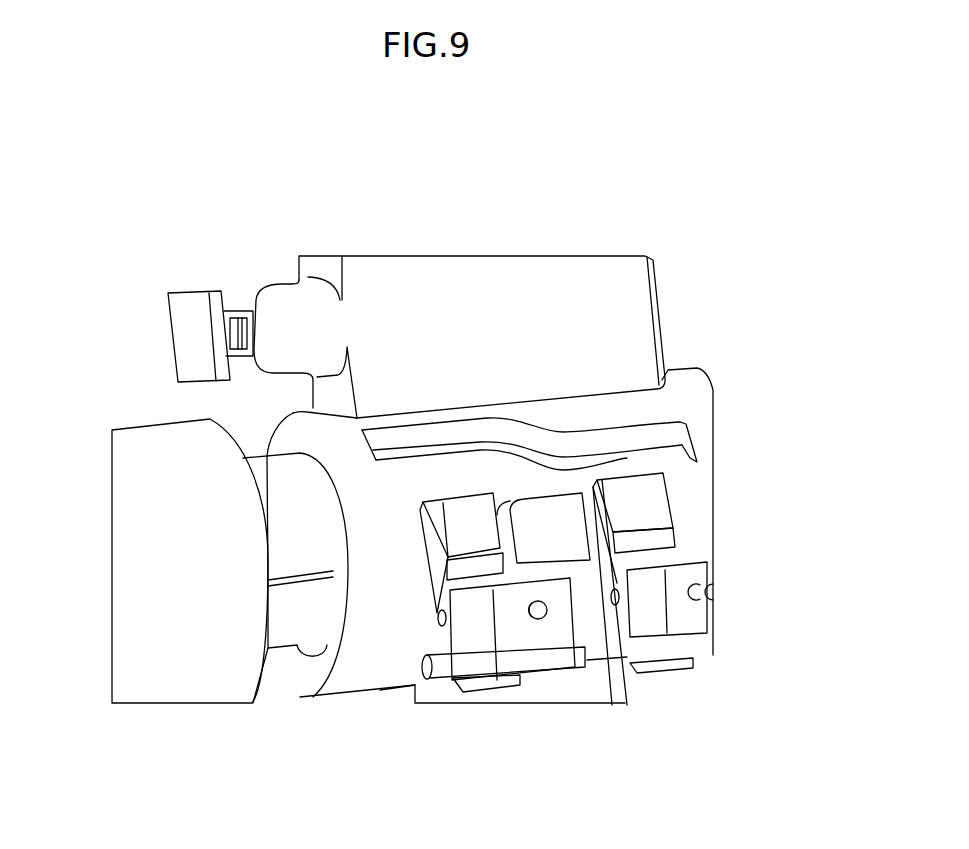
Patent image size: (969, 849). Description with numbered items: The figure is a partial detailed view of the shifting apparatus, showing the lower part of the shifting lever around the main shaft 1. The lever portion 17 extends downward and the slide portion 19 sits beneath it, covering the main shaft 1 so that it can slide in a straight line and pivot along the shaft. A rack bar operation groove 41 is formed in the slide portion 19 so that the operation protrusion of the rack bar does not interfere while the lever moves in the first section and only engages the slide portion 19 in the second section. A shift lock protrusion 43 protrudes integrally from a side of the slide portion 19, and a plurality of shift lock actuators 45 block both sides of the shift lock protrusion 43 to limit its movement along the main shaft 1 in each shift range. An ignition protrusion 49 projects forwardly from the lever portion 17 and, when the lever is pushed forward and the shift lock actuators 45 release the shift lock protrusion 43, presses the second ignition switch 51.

The main shaft 1 is at (293, 607).
The lever portion 17 is at (473, 290).
The slide portion 19 is at (373, 640).
The rack bar operation groove 41 is at (600, 460).
The shift lock protrusion 43 is at (562, 538).
The shift lock actuators 45 is at (522, 628).
The ignition protrusion 49 is at (274, 300).
The second ignition switch 51 is at (188, 323).